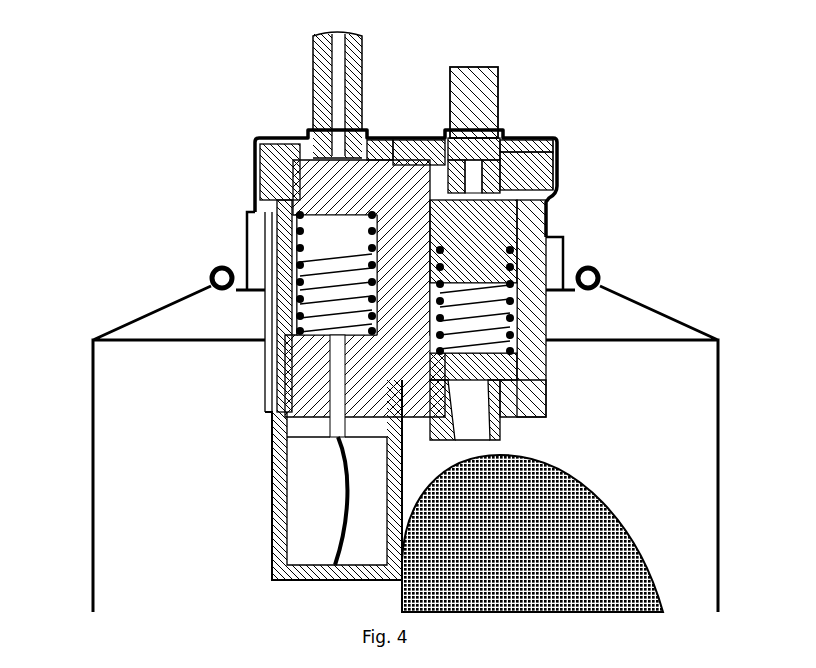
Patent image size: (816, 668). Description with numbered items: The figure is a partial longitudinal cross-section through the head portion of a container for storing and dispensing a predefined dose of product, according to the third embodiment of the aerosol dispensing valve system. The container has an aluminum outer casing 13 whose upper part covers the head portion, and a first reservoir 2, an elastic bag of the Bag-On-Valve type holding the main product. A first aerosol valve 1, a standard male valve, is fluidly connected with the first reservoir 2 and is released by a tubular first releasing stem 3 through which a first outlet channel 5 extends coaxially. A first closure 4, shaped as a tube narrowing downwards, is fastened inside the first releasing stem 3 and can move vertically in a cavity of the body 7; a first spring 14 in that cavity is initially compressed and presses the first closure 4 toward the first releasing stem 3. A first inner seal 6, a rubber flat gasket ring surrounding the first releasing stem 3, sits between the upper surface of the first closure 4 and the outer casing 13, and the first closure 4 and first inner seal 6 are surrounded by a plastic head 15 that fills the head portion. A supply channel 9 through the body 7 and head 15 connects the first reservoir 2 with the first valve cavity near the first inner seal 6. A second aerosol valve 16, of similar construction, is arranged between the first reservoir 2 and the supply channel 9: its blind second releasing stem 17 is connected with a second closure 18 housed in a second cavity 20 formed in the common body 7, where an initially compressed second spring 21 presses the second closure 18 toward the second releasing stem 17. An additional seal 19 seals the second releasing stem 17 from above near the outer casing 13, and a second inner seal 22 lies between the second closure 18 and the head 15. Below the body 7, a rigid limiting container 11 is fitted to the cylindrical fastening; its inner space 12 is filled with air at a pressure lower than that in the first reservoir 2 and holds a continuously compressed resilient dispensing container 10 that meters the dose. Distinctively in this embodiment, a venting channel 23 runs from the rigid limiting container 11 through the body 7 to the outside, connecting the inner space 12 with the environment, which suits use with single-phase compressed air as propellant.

The first aerosol valve 1 is at (257, 170).
The first reservoir 2 is at (527, 450).
The first releasing stem 3 is at (341, 94).
The first closure 4 is at (297, 142).
The first outlet channel 5 is at (331, 52).
The first inner seal 6 is at (370, 146).
The body 7 is at (297, 365).
The supply channel 9 is at (412, 142).
The dispensing container 10 is at (333, 486).
The rigid limiting container 11 is at (273, 540).
The inner space 12 is at (301, 512).
The outer casing 13 is at (562, 252).
The first spring 14 is at (270, 282).
The head 15 is at (558, 148).
The second aerosol valve 16 is at (505, 138).
The second releasing stem 17 is at (490, 62).
The second closure 18 is at (497, 227).
The additional seal 19 is at (523, 147).
The second cavity 20 is at (564, 236).
The second spring 21 is at (520, 325).
The second inner seal 22 is at (553, 170).
The venting channel 23 is at (266, 243).